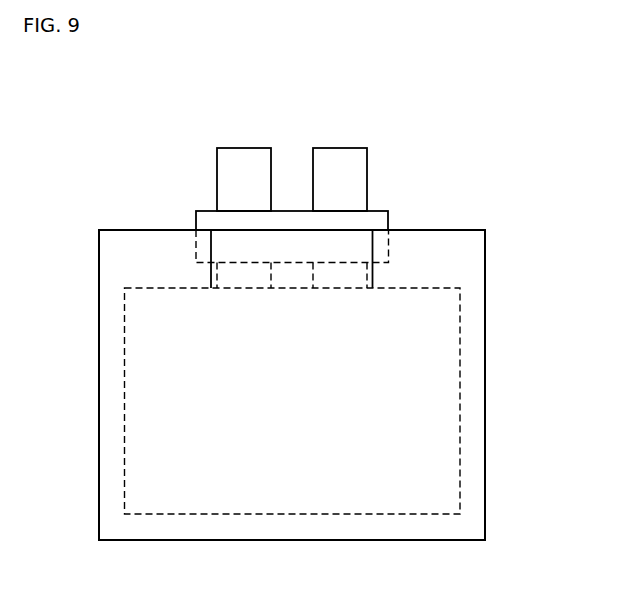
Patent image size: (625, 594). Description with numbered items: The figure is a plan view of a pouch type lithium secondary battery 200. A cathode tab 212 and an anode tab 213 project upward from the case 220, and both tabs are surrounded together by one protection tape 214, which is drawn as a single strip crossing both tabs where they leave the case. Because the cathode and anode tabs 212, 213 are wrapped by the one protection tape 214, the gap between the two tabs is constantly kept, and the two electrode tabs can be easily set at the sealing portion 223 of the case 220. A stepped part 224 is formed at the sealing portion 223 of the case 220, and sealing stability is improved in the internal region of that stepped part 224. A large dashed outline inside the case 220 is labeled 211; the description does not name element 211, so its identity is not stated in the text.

The pouch type lithium secondary battery 200 is at (78, 118).
The electrode assembly 211 is at (460, 428).
The cathode tab 212 is at (241, 155).
The anode tab 213 is at (341, 155).
The protection tape 214 is at (206, 216).
The case 220 is at (485, 361).
The sealing portion 223 is at (449, 240).
The stepped part 224 is at (388, 254).